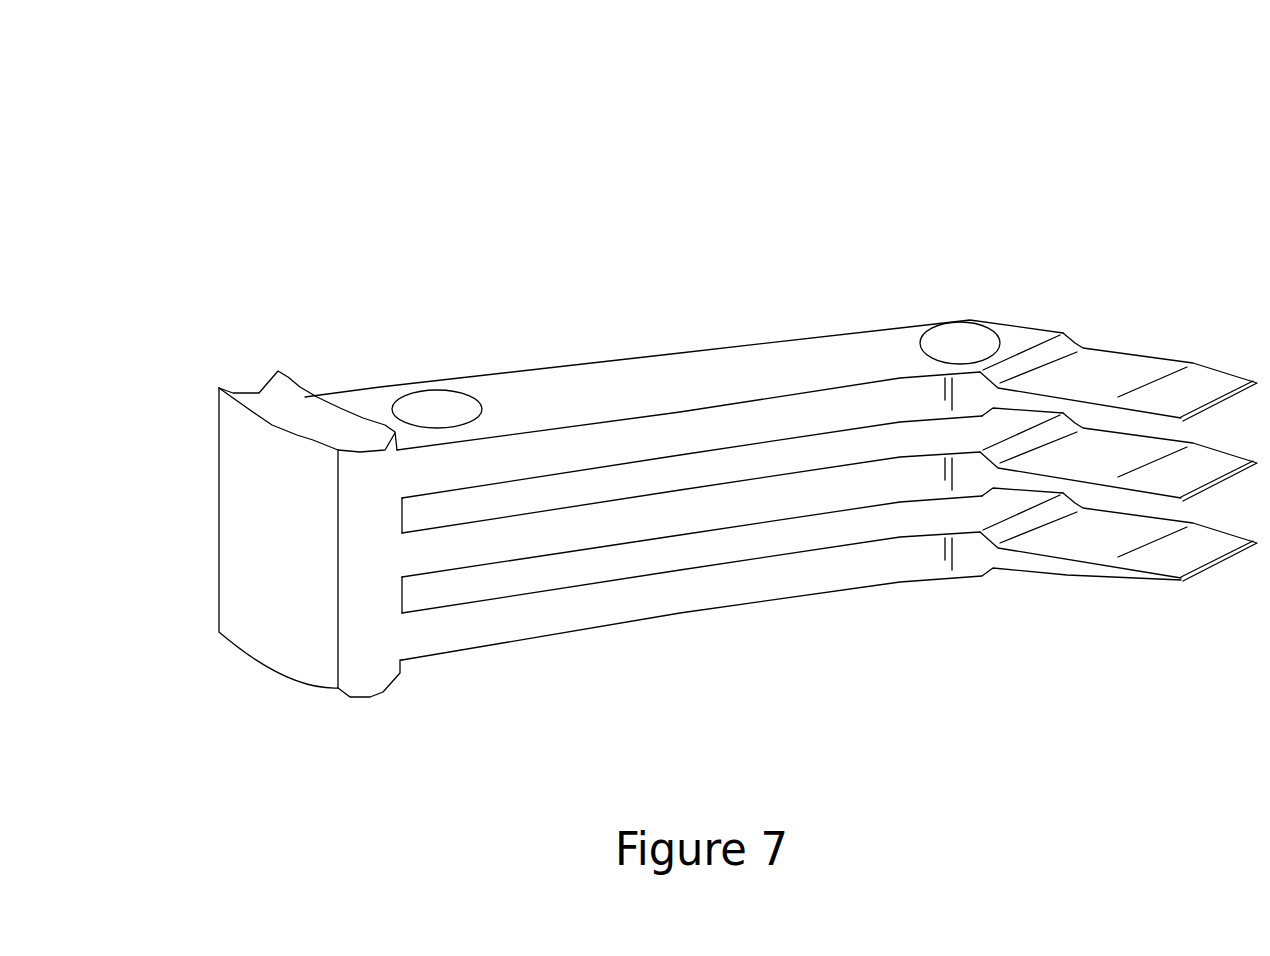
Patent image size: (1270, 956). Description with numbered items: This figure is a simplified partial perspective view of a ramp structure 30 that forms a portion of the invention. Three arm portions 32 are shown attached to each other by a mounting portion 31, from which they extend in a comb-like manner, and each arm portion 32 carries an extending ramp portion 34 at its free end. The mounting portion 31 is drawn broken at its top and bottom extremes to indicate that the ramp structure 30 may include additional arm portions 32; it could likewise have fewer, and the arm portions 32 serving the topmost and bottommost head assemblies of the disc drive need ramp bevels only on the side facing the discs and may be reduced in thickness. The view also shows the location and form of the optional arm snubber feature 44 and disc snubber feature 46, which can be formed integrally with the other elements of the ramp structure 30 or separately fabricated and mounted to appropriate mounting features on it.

The ramp structure 30 is at (734, 418).
The mounting portion 31 is at (355, 640).
The arm portion 32 is at (655, 437).
The ramp portion 34 is at (1163, 338).
The arm snubber feature 44 is at (958, 332).
The disc snubber feature 46 is at (437, 397).